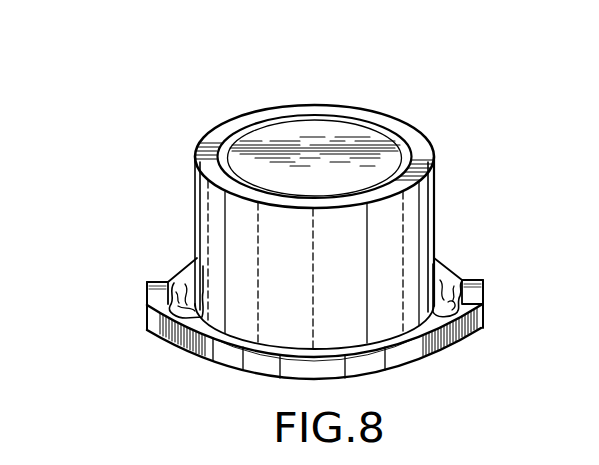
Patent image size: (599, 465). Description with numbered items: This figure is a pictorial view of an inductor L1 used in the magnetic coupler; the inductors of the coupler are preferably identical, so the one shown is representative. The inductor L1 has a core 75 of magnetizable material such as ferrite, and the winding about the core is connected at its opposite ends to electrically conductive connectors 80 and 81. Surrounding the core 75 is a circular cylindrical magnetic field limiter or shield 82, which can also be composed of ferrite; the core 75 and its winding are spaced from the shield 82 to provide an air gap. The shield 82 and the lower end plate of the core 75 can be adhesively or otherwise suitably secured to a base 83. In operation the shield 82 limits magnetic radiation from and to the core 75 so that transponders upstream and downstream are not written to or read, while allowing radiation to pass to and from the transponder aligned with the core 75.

The core 75 is at (326, 150).
The electrically conductive connector 80 is at (147, 305).
The electrically conductive connector 81 is at (472, 290).
The magnetic field limiter or shield 82 is at (216, 234).
The base 83 is at (398, 353).
The inductor L1 is at (438, 191).